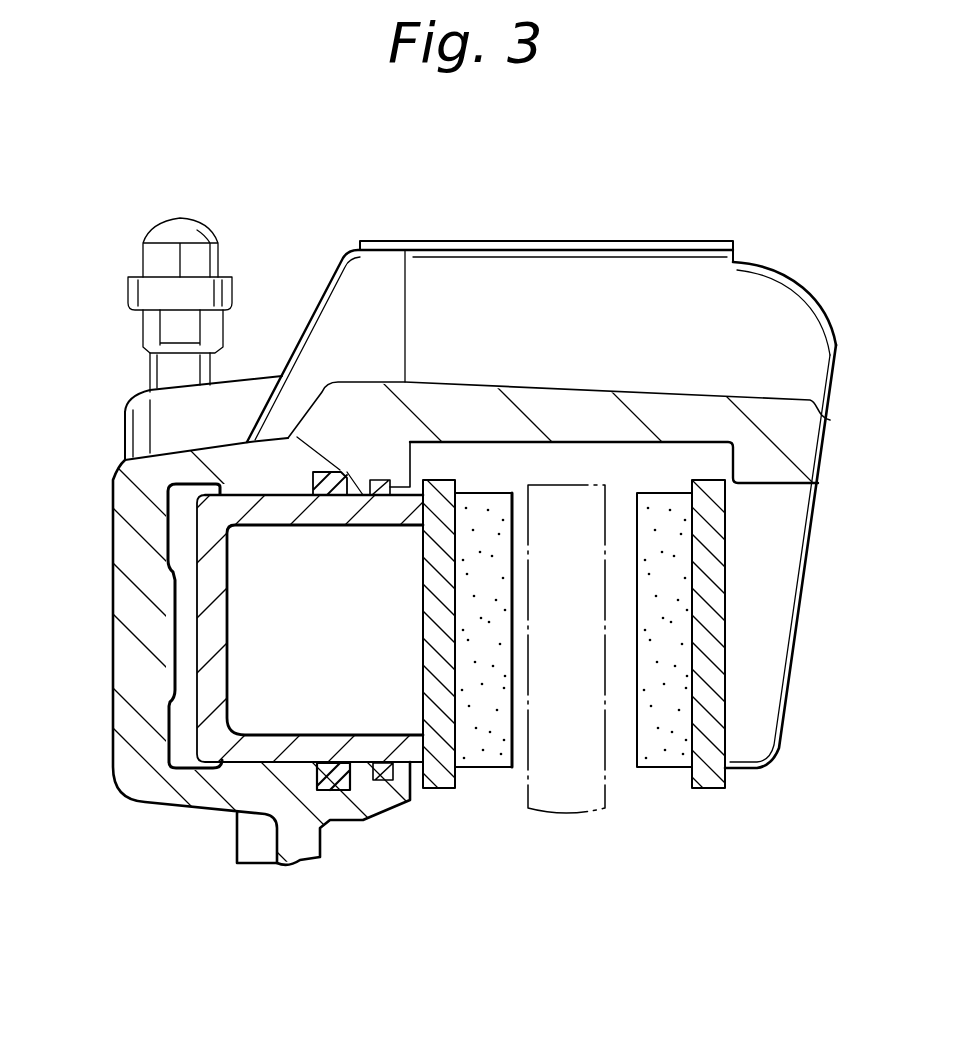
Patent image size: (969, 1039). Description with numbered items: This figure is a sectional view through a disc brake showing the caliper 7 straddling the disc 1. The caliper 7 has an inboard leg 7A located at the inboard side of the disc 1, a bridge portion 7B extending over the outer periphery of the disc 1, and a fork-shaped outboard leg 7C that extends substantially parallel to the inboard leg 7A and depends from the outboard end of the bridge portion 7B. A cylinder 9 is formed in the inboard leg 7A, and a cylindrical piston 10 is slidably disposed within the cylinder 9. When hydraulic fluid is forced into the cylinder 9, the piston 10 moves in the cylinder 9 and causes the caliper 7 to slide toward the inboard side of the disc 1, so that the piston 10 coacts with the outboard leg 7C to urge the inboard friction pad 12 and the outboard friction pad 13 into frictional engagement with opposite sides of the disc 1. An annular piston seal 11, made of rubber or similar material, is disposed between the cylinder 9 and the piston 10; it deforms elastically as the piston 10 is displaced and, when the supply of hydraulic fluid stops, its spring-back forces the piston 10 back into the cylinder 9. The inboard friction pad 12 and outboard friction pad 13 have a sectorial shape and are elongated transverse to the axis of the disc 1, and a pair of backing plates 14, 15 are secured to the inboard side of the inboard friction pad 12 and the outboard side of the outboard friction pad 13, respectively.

The disc 1 is at (577, 772).
The caliper 7 is at (110, 472).
The inboard leg 7A is at (140, 695).
The bridge portion 7B is at (570, 413).
The outboard leg 7C is at (757, 693).
The cylinder 9 is at (192, 757).
The piston 10 is at (208, 593).
The piston seal 11 is at (338, 782).
The inboard friction pad 12 is at (483, 747).
The outboard friction pad 13 is at (670, 747).
The backing plate 14 is at (440, 498).
The backing plate 15 is at (713, 567).